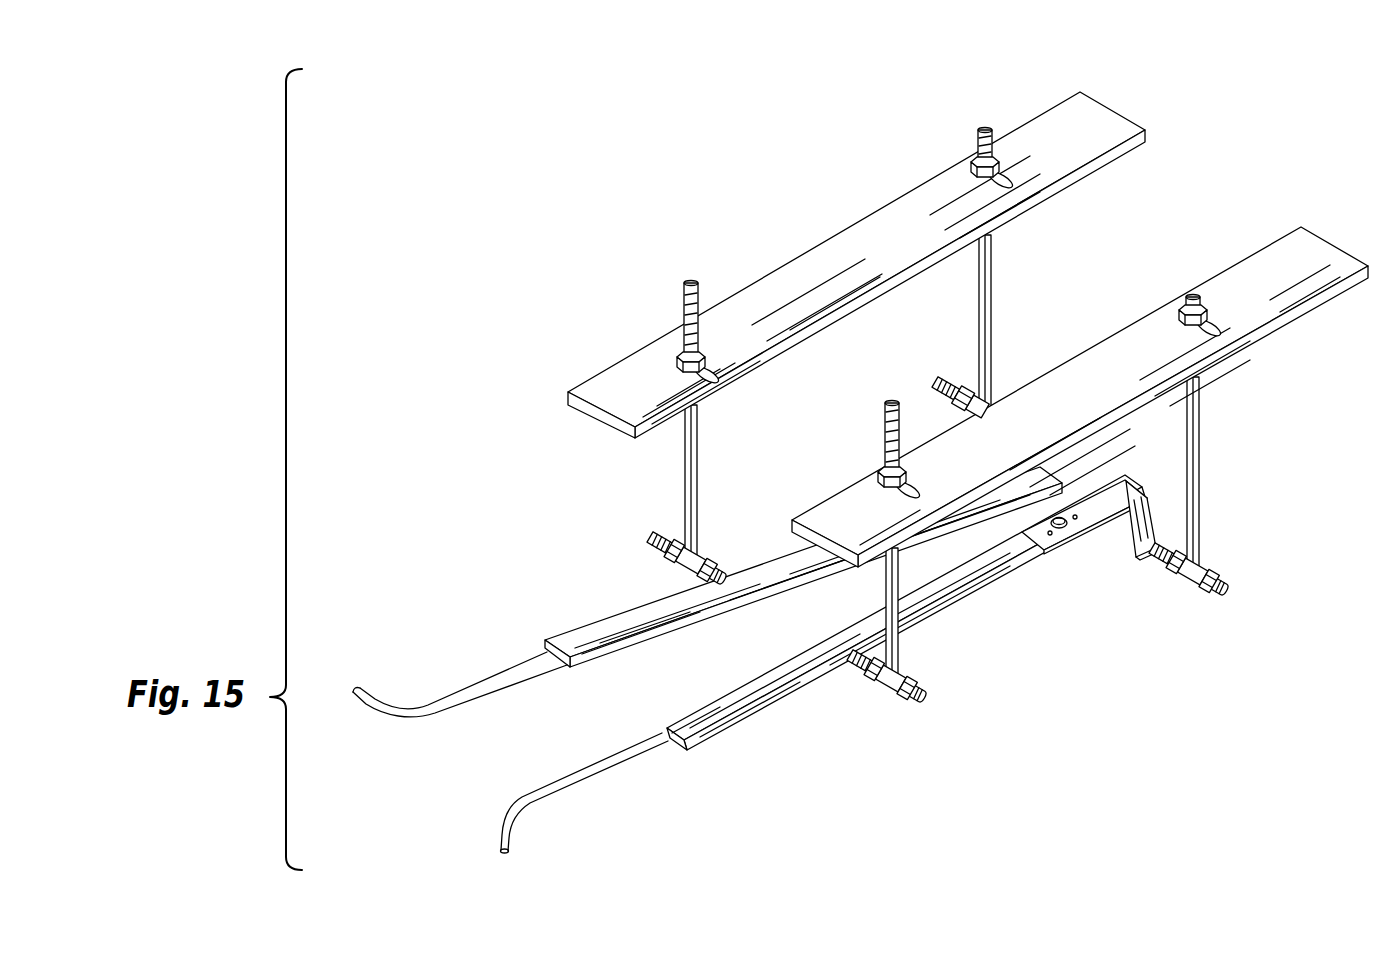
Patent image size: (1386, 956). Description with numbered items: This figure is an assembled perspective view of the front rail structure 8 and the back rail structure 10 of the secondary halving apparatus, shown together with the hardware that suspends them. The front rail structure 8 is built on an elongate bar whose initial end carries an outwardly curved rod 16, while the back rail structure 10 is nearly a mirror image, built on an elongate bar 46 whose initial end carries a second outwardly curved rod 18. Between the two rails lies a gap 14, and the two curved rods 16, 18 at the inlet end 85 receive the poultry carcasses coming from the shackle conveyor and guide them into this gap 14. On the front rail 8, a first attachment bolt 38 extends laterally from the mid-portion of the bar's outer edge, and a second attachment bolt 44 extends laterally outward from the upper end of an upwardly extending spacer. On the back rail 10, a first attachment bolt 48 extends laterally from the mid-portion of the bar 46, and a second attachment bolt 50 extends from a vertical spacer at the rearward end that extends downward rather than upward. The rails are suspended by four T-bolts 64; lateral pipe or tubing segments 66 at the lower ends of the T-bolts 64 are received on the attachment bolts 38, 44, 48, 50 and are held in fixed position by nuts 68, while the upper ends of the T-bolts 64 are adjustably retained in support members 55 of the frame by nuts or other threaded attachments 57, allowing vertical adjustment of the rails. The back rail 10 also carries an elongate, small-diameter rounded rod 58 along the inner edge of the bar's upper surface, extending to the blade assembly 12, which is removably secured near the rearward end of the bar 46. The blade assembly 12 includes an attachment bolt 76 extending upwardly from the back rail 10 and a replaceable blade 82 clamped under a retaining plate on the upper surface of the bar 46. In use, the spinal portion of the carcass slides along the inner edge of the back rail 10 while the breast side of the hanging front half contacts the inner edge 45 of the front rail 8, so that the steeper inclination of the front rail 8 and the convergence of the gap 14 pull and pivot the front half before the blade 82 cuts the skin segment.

The front rail structure 8 is at (532, 634).
The back rail structure 10 is at (693, 769).
The blade assembly 12 is at (1056, 548).
The gap 14 is at (598, 650).
The outwardly curved rod 16 is at (478, 688).
The outwardly curved rod 18 is at (560, 788).
The first attachment bolt 38 is at (650, 532).
The second attachment bolt 44 is at (945, 385).
The inner edge 45 is at (782, 593).
The elongate bar 46 is at (796, 672).
The first attachment bolt 48 is at (925, 703).
The second attachment bolt 50 is at (1213, 600).
The support members 55 is at (832, 258).
The nuts or other threaded attachments 57 is at (972, 165).
The rounded rod 58 is at (702, 706).
The T-bolts 64 is at (990, 262).
The lateral pipe or tubing segments 66 is at (955, 405).
The nuts 68 is at (705, 570).
The attachment bolt 76 is at (1062, 530).
The replaceable blade 82 is at (1065, 505).
The inlet end 85 is at (445, 770).